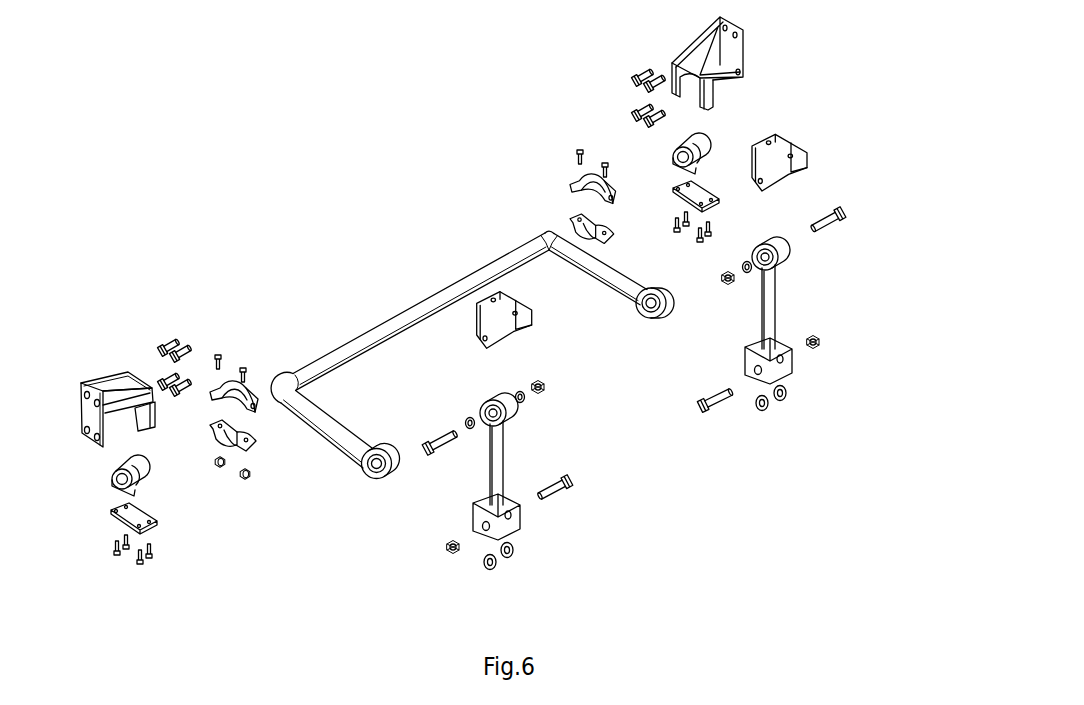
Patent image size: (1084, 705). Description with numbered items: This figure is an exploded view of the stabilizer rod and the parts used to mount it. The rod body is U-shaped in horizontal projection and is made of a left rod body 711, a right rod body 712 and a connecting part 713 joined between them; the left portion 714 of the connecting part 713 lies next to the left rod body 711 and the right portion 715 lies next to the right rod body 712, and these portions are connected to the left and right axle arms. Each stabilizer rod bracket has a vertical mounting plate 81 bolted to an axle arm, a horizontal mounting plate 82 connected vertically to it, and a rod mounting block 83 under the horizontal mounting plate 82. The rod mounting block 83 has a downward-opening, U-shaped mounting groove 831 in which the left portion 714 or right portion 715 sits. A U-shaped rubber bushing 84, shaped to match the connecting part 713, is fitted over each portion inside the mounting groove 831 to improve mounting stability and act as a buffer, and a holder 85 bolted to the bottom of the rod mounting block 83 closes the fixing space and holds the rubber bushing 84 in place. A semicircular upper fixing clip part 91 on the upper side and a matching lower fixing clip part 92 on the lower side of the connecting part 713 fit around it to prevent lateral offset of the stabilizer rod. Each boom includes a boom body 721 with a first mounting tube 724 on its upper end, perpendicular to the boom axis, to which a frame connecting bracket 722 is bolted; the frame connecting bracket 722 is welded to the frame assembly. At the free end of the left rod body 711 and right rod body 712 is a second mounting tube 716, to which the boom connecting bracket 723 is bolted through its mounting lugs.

The vertical mounting plate 81 is at (93, 408).
The horizontal mounting plate 82 is at (715, 52).
The rod mounting block 83 is at (707, 96).
The mounting groove 831 is at (670, 78).
The rubber bushing 84 is at (153, 482).
The holder 85 is at (140, 528).
The upper fixing clip part 91 is at (243, 385).
The lower fixing clip part 92 is at (232, 445).
The left rod body 711 is at (343, 430).
The right rod body 712 is at (605, 273).
The connecting part 713 is at (423, 306).
The left portion of the connecting part 714 is at (331, 358).
The right portion of the connecting part 715 is at (517, 252).
The second mounting tube 716 is at (380, 472).
The boom body 721 is at (498, 470).
The frame connecting bracket 722 is at (512, 317).
The boom connecting bracket 723 is at (497, 523).
The first mounting tube 724 is at (505, 413).